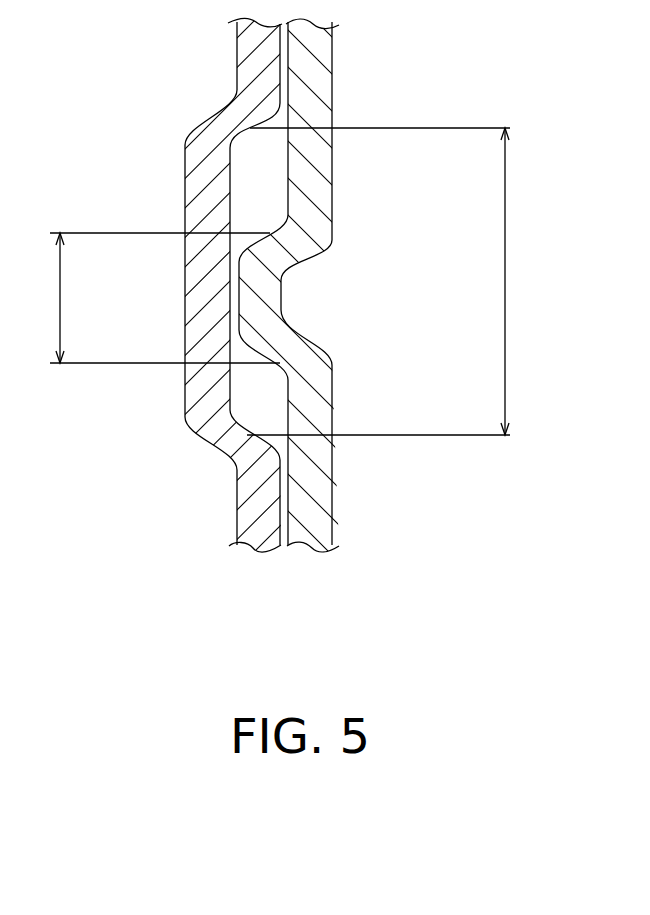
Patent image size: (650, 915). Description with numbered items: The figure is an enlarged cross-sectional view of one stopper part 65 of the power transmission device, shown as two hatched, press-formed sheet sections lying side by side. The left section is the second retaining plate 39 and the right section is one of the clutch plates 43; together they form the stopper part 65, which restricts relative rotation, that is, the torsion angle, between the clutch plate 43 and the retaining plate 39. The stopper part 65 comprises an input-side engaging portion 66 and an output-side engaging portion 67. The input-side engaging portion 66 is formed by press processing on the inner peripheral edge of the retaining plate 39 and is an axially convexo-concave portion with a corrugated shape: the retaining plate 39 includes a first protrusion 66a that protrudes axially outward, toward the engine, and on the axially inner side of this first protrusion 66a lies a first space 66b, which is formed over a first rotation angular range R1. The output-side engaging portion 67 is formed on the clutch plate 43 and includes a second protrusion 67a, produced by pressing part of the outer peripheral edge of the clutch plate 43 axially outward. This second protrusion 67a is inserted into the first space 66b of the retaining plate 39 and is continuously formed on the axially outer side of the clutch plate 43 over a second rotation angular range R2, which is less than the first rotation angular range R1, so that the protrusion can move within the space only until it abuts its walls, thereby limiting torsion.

The second retaining plate 39 is at (325, 300).
The clutch plate 43 is at (325, 300).
The stopper part 65 is at (173, 206).
The input-side engaging portion 66 is at (201, 297).
The first protrusion 66a is at (205, 347).
The first space 66b is at (232, 183).
The output-side engaging portion 67 is at (286, 312).
The second protrusion 67a is at (262, 300).
The first rotation angular range R1 is at (400, 281).
The second rotation angular range R2 is at (145, 298).